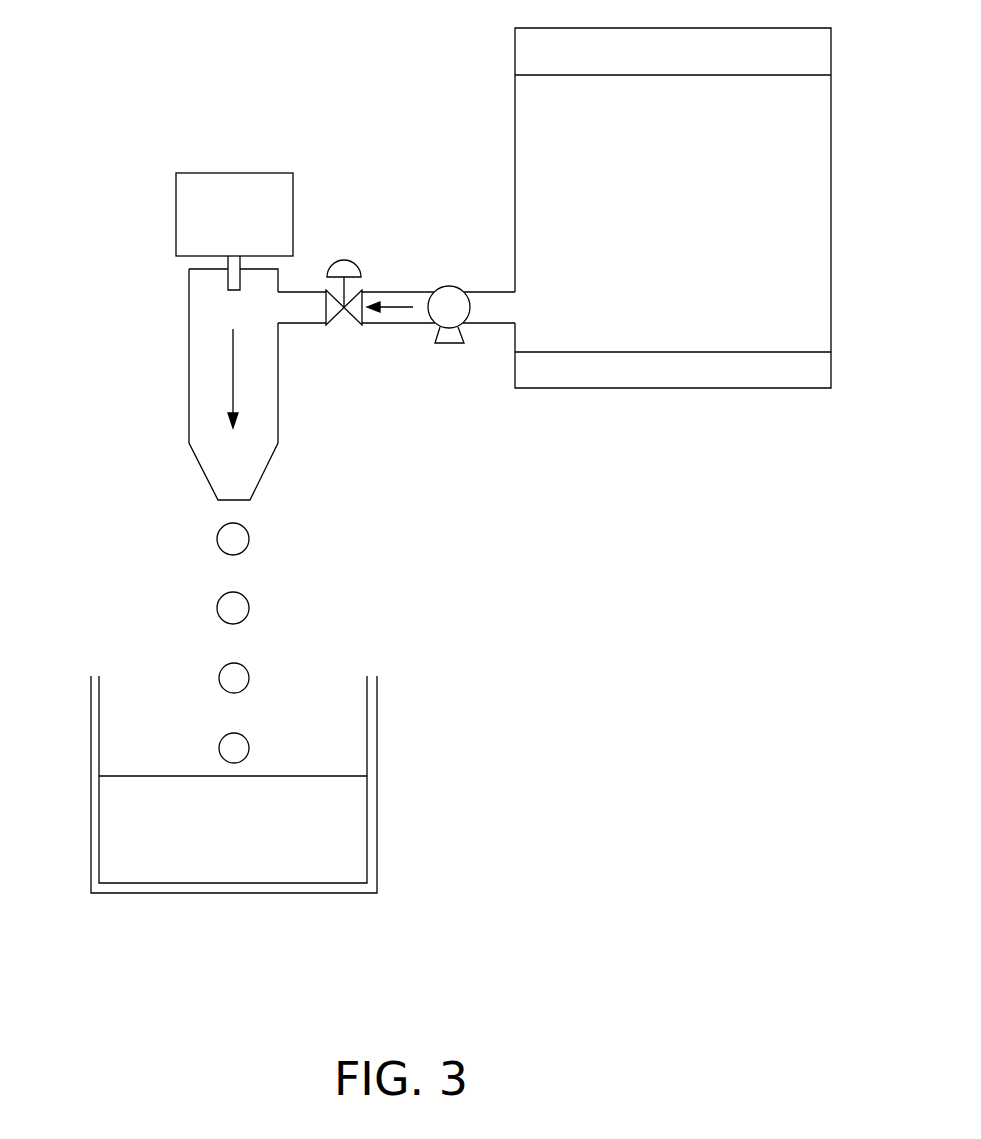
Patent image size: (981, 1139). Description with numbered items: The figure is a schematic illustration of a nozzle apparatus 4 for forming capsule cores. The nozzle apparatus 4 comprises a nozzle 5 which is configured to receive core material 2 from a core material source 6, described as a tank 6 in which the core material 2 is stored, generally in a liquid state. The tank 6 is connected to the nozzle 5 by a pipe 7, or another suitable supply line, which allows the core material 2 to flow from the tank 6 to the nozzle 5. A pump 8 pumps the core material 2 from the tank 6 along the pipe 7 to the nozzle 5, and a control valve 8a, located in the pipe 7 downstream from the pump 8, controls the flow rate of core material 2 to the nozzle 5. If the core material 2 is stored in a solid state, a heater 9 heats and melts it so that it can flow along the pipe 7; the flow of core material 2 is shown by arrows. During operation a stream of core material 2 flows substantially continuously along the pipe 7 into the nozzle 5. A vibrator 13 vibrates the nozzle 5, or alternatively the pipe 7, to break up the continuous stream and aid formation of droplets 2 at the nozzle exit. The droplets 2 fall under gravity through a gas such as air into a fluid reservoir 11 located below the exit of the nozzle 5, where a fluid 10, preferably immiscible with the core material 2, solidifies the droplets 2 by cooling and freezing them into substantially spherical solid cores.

The core material 2 is at (663, 197).
The nozzle apparatus 4 is at (113, 140).
The nozzle 5 is at (278, 395).
The core material source 6 is at (515, 121).
The pipe 7 is at (303, 288).
The pump 8 is at (457, 343).
The control valve 8a is at (340, 260).
The heater 9 is at (663, 380).
The fluid 10 is at (296, 840).
The fluid reservoir 11 is at (377, 728).
The vibrator 13 is at (219, 226).